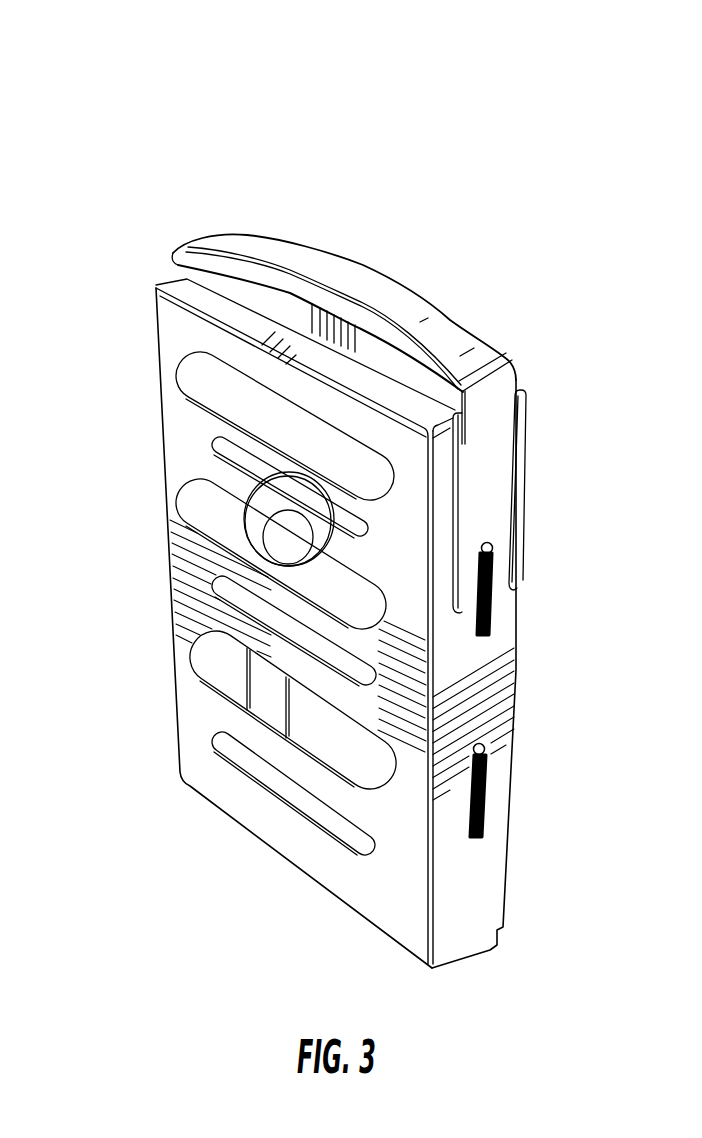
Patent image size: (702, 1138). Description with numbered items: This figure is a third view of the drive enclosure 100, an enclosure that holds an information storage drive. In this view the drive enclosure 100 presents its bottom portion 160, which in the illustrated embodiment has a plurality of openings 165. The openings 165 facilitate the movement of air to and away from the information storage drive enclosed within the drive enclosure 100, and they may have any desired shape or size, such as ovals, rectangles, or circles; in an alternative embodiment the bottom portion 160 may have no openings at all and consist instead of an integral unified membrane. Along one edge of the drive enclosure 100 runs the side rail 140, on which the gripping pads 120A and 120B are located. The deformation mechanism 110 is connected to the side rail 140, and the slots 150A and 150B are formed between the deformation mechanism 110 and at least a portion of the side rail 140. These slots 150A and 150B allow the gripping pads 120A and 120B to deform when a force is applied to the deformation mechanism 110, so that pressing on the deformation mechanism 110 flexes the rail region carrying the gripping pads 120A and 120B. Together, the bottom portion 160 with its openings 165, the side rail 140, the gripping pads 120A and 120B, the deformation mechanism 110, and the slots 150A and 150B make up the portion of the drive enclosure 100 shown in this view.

The drive enclosure 100 is at (328, 493).
The deformation mechanism 110 is at (344, 291).
The gripping pad 120A is at (548, 589).
The gripping pad 120B is at (538, 791).
The side rail 140 is at (525, 674).
The slot 150A is at (560, 490).
The slot 150B is at (532, 513).
The bottom portion 160 is at (273, 628).
The openings 165 is at (251, 763).